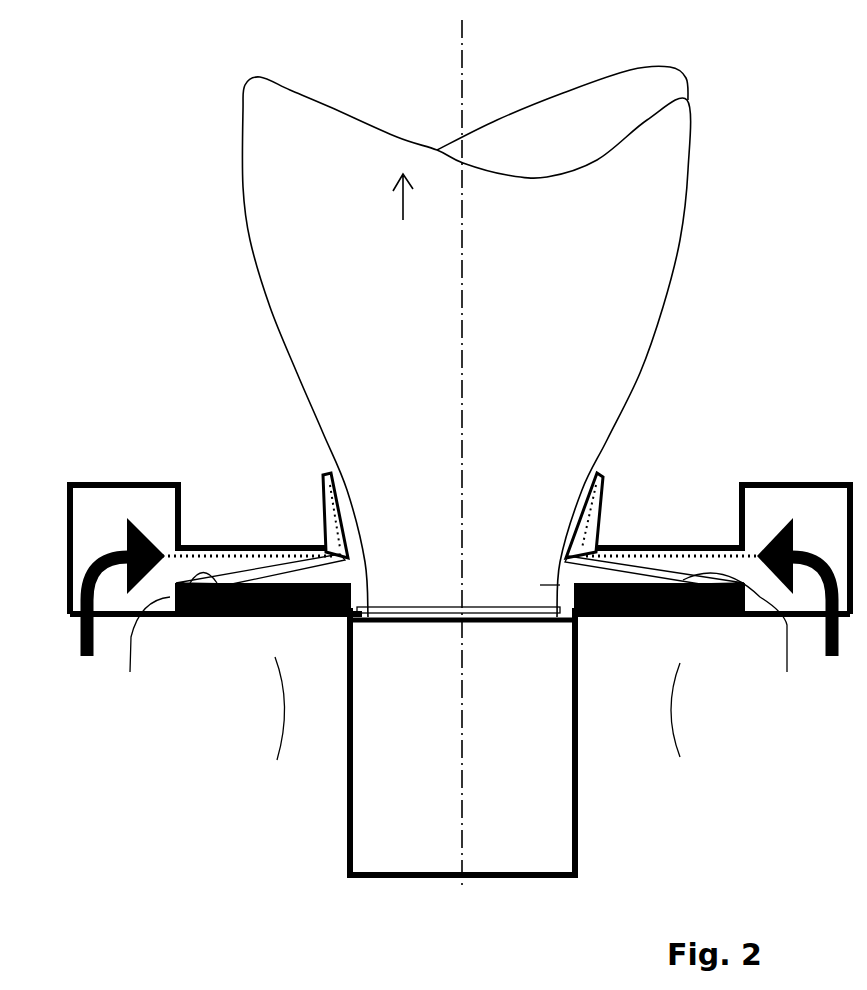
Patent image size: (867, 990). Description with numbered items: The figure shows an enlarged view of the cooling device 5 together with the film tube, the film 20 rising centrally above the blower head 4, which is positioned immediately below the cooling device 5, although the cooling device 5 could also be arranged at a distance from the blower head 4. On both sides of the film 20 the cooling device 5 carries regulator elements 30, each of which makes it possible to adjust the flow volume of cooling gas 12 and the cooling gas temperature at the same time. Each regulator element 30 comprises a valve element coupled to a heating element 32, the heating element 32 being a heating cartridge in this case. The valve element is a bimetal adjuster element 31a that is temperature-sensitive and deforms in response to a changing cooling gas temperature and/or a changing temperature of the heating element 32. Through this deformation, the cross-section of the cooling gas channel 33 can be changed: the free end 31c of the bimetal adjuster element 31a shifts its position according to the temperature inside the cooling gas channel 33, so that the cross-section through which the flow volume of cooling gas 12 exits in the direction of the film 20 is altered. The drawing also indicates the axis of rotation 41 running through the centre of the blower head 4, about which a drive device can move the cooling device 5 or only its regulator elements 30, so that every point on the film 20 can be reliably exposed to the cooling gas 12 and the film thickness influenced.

The film 20 is at (687, 177).
The cooling device 5 is at (66, 428).
The blower head 4 is at (578, 693).
The axis of rotation 41 is at (462, 745).
The cooling gas 12 is at (320, 525).
The cooling gas channel 33 is at (284, 543).
The heating element 32 is at (225, 617).
The bimetal adjuster element 31a is at (180, 617).
The free end 31c is at (312, 612).
The regulator element 30 is at (477, 708).